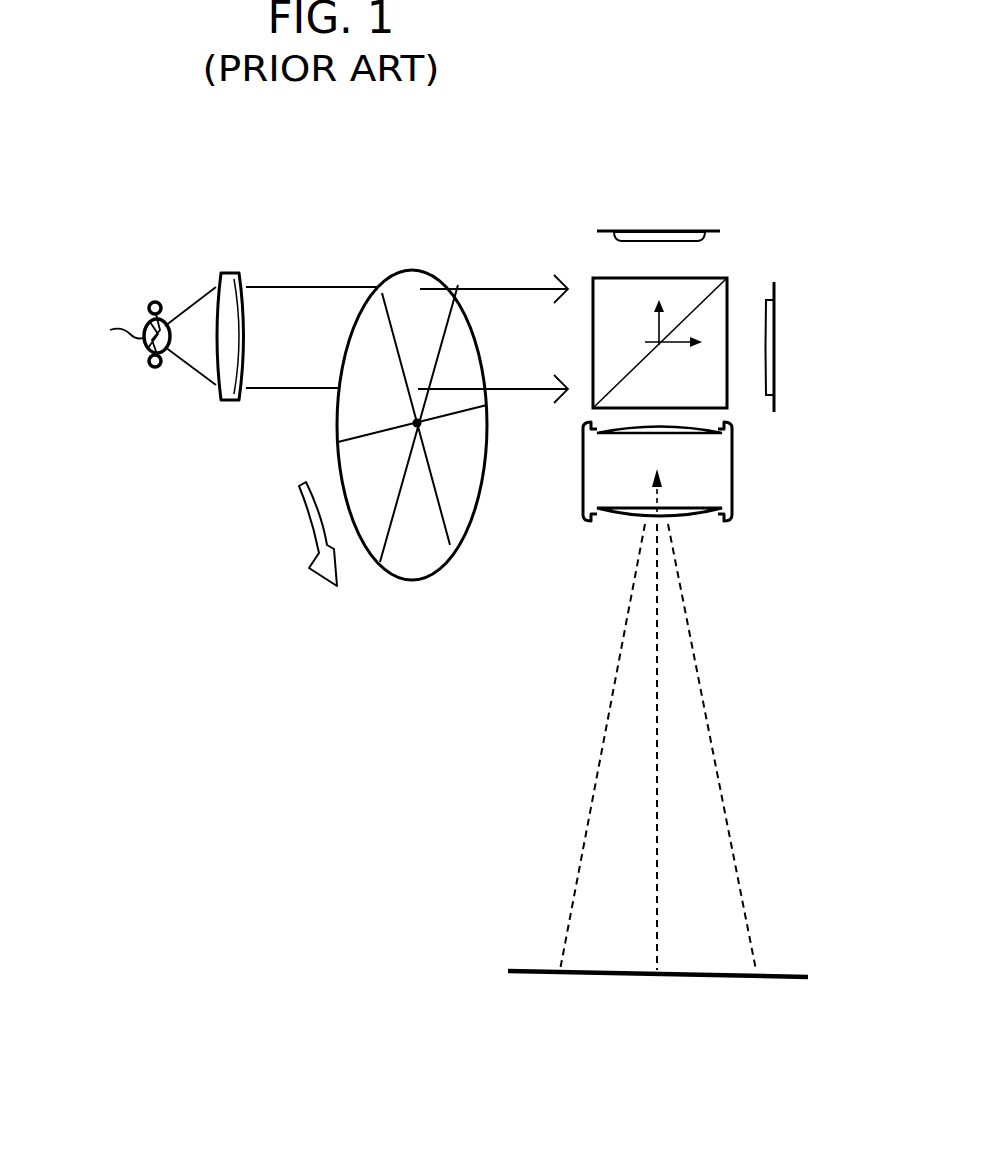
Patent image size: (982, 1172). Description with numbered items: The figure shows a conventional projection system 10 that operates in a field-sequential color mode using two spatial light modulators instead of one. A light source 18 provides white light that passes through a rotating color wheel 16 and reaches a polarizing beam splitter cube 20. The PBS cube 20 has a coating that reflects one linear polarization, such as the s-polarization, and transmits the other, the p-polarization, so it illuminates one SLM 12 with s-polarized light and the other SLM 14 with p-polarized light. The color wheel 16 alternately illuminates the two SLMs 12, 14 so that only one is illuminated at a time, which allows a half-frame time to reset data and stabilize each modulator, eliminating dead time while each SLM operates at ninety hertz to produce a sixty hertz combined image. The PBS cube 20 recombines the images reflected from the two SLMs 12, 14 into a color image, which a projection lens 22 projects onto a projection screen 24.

The projection system 10 is at (351, 715).
The spatial light modulator 12 is at (637, 230).
The spatial light modulator 14 is at (776, 352).
The color wheel 16 is at (415, 577).
The light source 18 is at (142, 338).
The polarizing beam splitter cube 20 is at (722, 300).
The projection lens 22 is at (724, 476).
The projection screen 24 is at (805, 972).